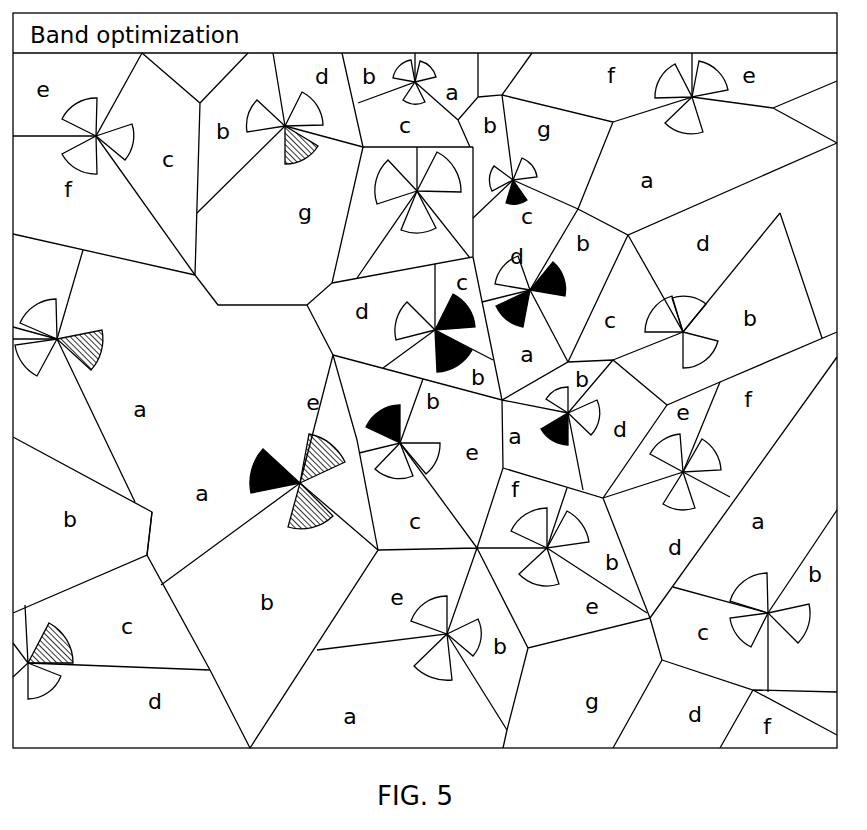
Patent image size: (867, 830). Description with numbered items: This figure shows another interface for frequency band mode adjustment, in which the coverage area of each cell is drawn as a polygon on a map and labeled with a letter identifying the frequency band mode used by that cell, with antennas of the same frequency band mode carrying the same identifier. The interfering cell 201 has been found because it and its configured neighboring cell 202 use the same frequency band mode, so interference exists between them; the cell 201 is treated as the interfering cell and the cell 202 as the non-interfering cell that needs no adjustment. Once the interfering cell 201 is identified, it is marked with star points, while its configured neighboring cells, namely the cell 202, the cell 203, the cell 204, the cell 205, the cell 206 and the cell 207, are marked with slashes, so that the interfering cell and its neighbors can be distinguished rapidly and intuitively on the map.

The interfering cell 201 is at (269, 486).
The cell 202 is at (88, 376).
The cell 203 is at (276, 177).
The cell 204 is at (262, 526).
The cell 205 is at (111, 652).
The cell 206 is at (82, 525).
The cell 207 is at (318, 419).